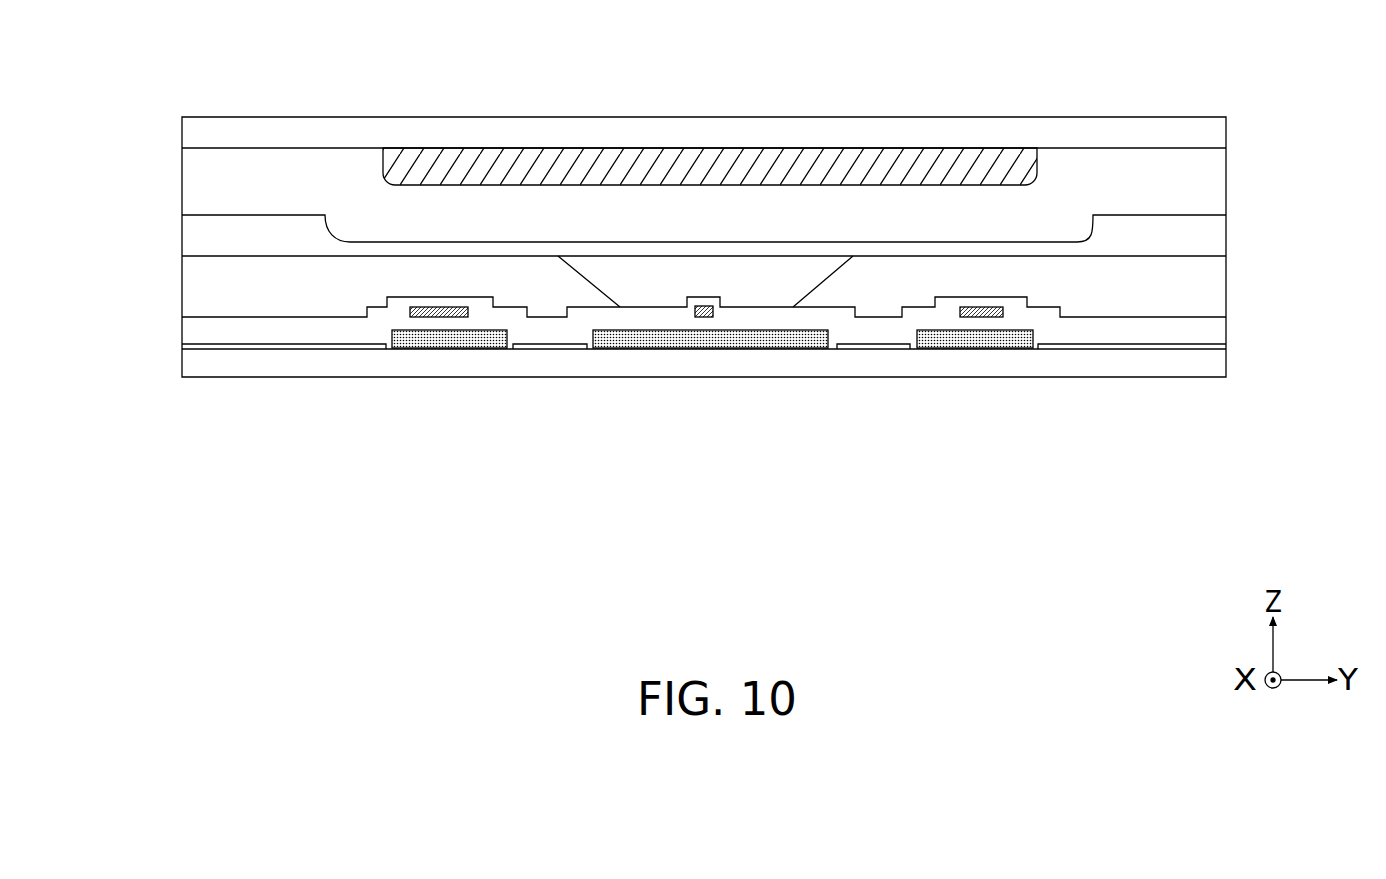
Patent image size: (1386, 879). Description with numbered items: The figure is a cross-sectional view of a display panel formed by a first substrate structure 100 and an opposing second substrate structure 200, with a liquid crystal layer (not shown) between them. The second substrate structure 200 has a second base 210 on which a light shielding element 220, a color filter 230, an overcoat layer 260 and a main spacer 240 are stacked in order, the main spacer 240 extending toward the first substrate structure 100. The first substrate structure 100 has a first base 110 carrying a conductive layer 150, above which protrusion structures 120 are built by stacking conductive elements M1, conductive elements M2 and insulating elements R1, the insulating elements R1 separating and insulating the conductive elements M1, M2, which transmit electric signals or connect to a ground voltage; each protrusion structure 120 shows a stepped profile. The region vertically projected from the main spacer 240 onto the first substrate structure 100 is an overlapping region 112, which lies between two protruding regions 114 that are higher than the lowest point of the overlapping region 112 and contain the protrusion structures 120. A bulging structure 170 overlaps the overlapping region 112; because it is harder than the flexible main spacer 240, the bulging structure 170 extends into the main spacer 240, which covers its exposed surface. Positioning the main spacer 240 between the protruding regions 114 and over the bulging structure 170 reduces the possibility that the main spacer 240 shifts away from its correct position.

The first substrate structure 100 is at (1185, 377).
The first base 110 is at (1082, 363).
The overlapping region 112 is at (712, 390).
The protruding regions 114 is at (452, 390).
The protrusion structure 120 is at (387, 298).
The conductive layer 150 is at (230, 377).
The bulging structure 170 is at (713, 305).
The second substrate structure 200 is at (978, 117).
The second base 210 is at (548, 135).
The light shielding element 220 is at (875, 162).
The color filter 230 is at (1205, 180).
The main spacer 240 is at (722, 272).
The overcoat layer 260 is at (1205, 236).
The conductive elements M1 is at (410, 333).
The conductive elements M2 is at (458, 315).
The insulating elements R1 is at (520, 323).